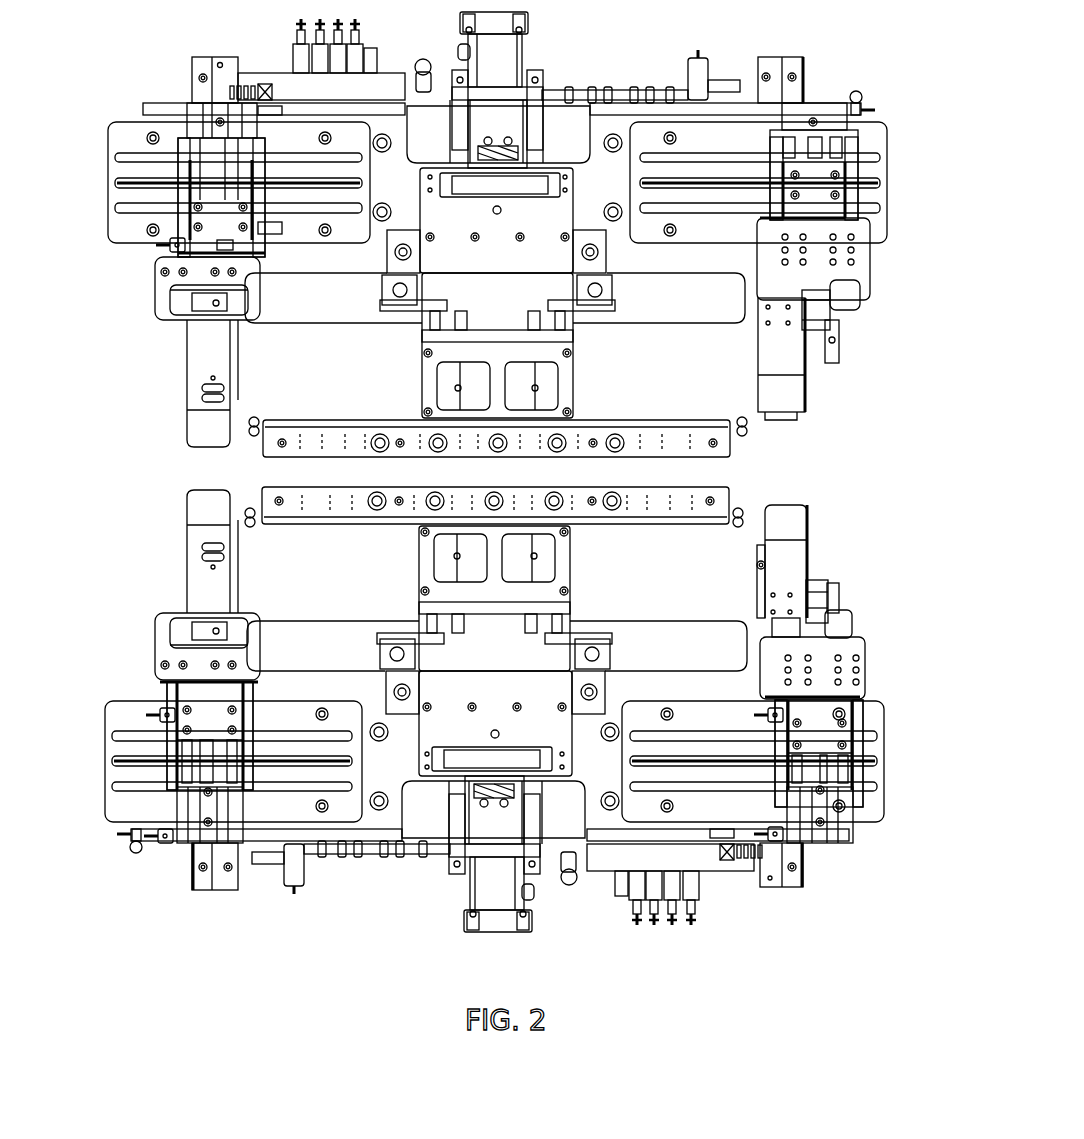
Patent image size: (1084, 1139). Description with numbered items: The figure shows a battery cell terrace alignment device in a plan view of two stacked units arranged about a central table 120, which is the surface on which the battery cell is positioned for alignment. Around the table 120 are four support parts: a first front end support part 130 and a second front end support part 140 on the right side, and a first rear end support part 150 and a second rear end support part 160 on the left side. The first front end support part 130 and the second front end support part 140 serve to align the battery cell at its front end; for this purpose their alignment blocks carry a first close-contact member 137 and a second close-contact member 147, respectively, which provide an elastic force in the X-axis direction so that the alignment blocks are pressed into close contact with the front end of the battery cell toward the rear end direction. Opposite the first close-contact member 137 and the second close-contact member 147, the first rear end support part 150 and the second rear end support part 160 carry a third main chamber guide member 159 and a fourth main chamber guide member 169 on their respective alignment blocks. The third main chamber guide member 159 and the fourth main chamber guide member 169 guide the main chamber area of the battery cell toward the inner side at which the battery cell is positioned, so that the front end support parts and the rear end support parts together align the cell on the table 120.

The table 120 is at (333, 537).
The first front end support part 130 is at (826, 376).
The first close-contact member 137 is at (835, 310).
The second front end support part 140 is at (828, 553).
The second close-contact member 147 is at (833, 598).
The first rear end support part 150 is at (166, 345).
The third main chamber guide member 159 is at (200, 396).
The second rear end support part 160 is at (170, 545).
The fourth main chamber guide member 169 is at (200, 560).